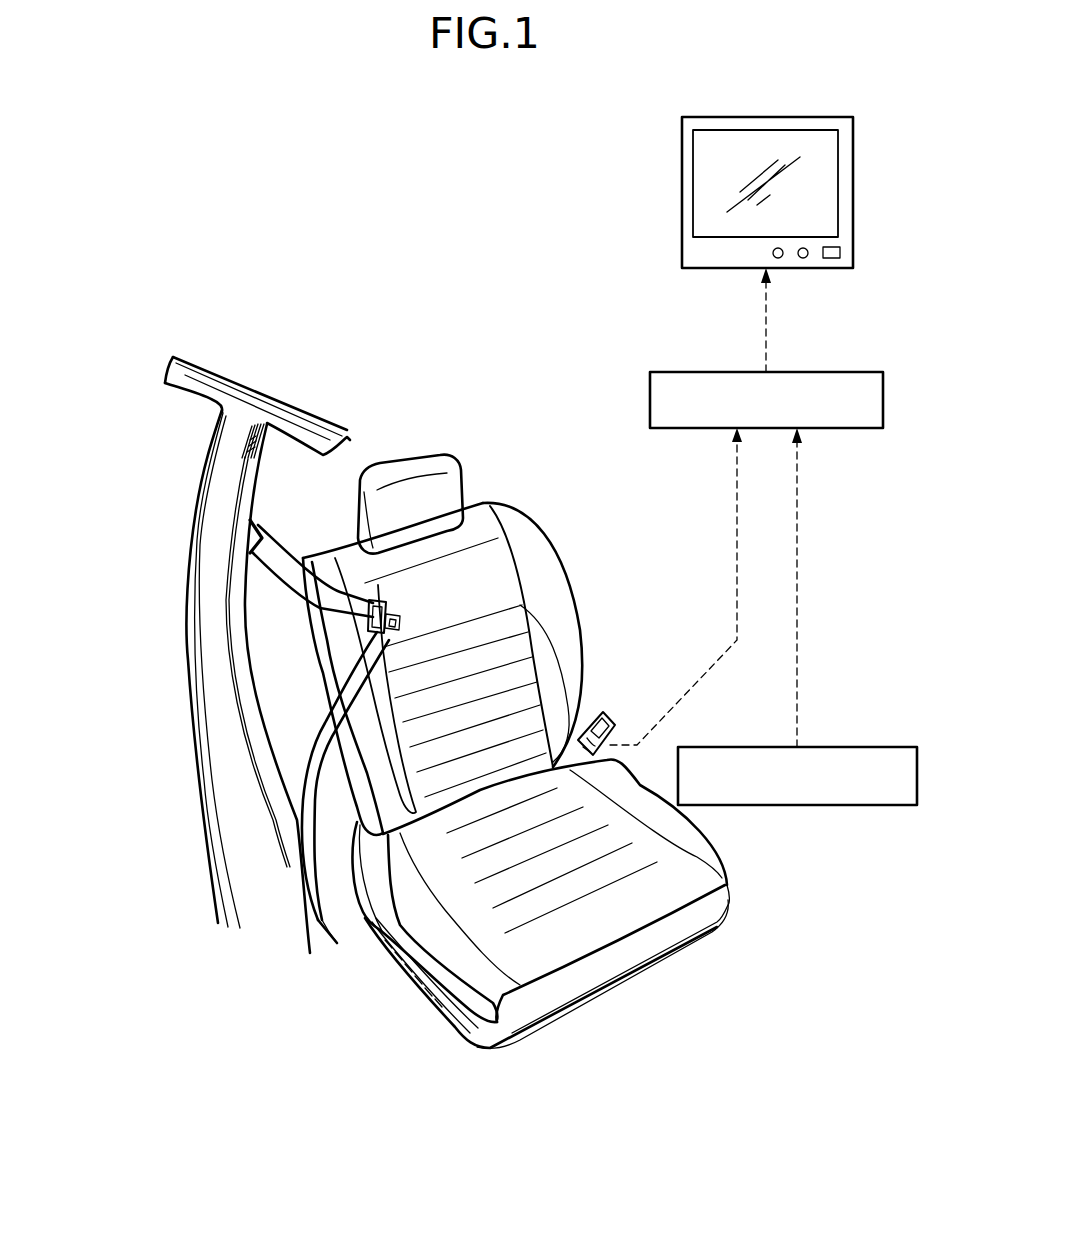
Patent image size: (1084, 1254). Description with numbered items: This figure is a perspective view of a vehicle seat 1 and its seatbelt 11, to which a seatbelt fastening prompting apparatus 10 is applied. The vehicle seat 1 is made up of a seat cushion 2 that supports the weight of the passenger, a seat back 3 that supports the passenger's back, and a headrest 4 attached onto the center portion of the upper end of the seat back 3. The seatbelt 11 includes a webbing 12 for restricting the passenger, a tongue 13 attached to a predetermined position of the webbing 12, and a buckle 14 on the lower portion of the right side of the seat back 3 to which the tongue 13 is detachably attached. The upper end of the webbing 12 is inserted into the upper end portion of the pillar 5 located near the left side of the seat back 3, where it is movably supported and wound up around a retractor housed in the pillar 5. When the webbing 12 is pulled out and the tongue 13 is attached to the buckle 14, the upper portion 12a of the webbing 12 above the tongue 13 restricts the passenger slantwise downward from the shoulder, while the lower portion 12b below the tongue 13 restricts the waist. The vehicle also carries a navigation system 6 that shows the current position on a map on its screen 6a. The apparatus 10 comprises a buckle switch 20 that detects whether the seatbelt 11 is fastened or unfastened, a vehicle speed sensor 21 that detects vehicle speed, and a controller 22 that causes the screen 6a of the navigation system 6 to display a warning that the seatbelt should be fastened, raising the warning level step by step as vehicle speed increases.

The vehicle seat 1 is at (522, 718).
The seat cushion 2 is at (630, 907).
The seat back 3 is at (513, 572).
The headrest 4 is at (430, 487).
The pillar 5 is at (207, 692).
The navigation system 6 is at (710, 190).
The screen 6a is at (760, 205).
The seatbelt fastening prompting apparatus 10 is at (404, 637).
The seatbelt 11 is at (298, 743).
The webbing 12 is at (228, 731).
The upper portion of the webbing 12a is at (277, 580).
The lower portion of the webbing 12b is at (323, 713).
The tongue 13 is at (395, 603).
The buckle 14 is at (592, 720).
The buckle switch 20 is at (625, 745).
The vehicle speed sensor 21 is at (818, 747).
The controller 22 is at (805, 372).